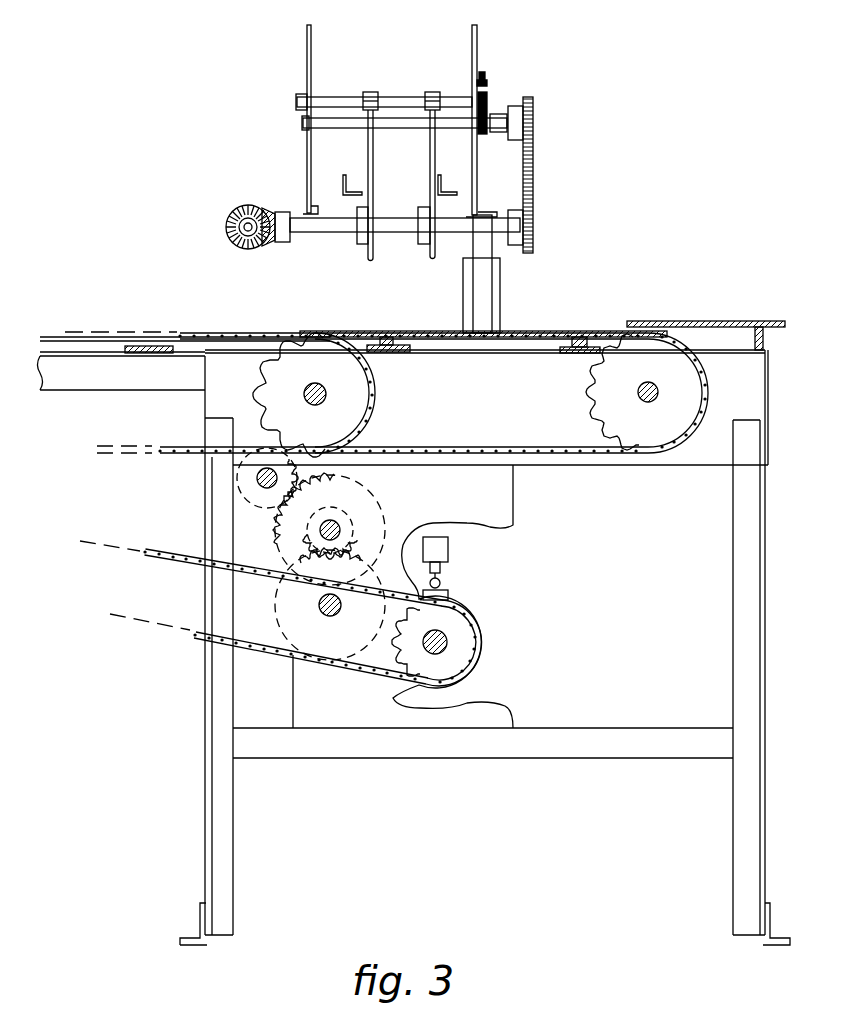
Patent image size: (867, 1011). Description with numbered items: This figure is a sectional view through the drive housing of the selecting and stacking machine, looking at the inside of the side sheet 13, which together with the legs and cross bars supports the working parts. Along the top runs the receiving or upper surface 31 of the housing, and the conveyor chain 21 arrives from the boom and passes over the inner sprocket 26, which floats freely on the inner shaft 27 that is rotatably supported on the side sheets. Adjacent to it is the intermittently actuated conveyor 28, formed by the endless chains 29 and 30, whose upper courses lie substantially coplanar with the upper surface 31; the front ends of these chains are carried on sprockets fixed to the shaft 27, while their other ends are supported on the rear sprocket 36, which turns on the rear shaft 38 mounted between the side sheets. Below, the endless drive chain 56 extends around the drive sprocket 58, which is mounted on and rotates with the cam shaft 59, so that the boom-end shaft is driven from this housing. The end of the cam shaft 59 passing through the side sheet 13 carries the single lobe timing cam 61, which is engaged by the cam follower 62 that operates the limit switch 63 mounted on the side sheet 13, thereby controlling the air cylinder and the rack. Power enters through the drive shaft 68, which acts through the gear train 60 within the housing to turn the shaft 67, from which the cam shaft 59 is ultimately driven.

The side sheet 13 is at (500, 504).
The endless chain 21 is at (162, 456).
The inner sprocket 26 is at (370, 392).
The inner shaft 27 is at (316, 383).
The intermittently actuated conveyor 28 is at (667, 464).
The endless chain 29 is at (707, 398).
The endless chain 30 is at (506, 448).
The upper surface 31 is at (530, 330).
The rear sprocket 36 is at (697, 386).
The rear shaft 38 is at (651, 383).
The endless drive chain 56 is at (347, 667).
The drive sprocket 58 is at (458, 646).
The cam shaft 59 is at (447, 636).
The gear train 60 is at (393, 496).
The single lobe timing cam 61 is at (448, 595).
The cam follower 62 is at (441, 569).
The limit switch 63 is at (448, 549).
The shaft 67 is at (334, 611).
The drive shaft 68 is at (266, 491).